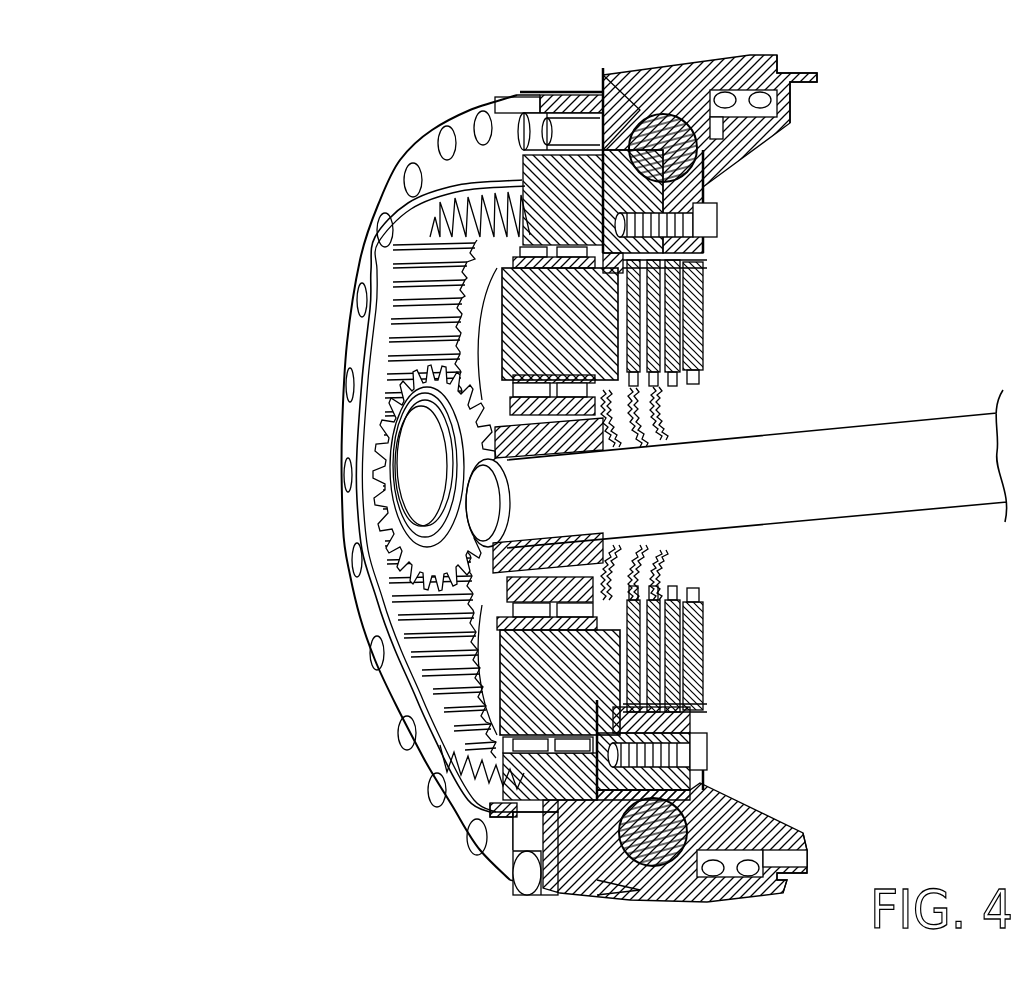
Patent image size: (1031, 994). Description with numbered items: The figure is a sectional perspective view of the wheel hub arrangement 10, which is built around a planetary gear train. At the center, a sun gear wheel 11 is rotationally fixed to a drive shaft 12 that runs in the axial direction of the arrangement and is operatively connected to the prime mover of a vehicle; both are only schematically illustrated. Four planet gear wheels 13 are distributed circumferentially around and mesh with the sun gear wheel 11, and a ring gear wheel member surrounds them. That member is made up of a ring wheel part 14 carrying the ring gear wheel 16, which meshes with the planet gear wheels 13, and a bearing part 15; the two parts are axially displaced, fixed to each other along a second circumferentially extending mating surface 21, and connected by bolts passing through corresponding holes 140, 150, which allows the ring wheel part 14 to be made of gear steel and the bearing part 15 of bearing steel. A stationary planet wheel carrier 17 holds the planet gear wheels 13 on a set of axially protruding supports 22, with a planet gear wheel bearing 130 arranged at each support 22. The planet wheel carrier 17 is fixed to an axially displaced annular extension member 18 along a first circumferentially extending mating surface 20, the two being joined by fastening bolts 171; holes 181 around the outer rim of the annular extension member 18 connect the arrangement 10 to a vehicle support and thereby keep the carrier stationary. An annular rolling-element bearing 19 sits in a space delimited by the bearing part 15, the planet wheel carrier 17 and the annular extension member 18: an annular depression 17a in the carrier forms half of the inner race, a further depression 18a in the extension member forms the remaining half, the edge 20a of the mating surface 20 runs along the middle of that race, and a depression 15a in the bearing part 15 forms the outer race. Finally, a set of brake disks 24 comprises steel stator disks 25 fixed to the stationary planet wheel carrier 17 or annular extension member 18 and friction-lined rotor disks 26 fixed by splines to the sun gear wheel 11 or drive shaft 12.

The wheel hub arrangement 10 is at (235, 330).
The sun gear wheel 11 is at (440, 580).
The drive shaft 12 is at (850, 470).
The planet gear wheels 13 is at (400, 425).
The planet gear wheel bearing 130 is at (422, 266).
The ring wheel part 14 is at (382, 204).
The holes 140 is at (438, 150).
The bearing part 15 is at (582, 115).
The holes 150 is at (536, 130).
The depression forming outer bearing race 15a is at (690, 125).
The ring gear wheel 16 is at (412, 318).
The planet wheel carrier 17 is at (697, 787).
The annular depression 17a is at (618, 150).
The annular extension member 18 is at (733, 818).
The further depression 18a is at (712, 158).
The holes 181 is at (808, 862).
The annular rolling-element bearing 19 is at (645, 118).
The first circumferentially extending mating surface 20 is at (700, 193).
The edge of mating surface 20a is at (703, 178).
The fastening elements/bolts 171 is at (695, 224).
The second circumferentially extending mating surface 21 is at (525, 820).
The axially protruding supports 22 is at (547, 683).
The set of brake disks 24 is at (718, 313).
The stator disks 25 is at (707, 354).
The rotor disks 26 is at (683, 381).